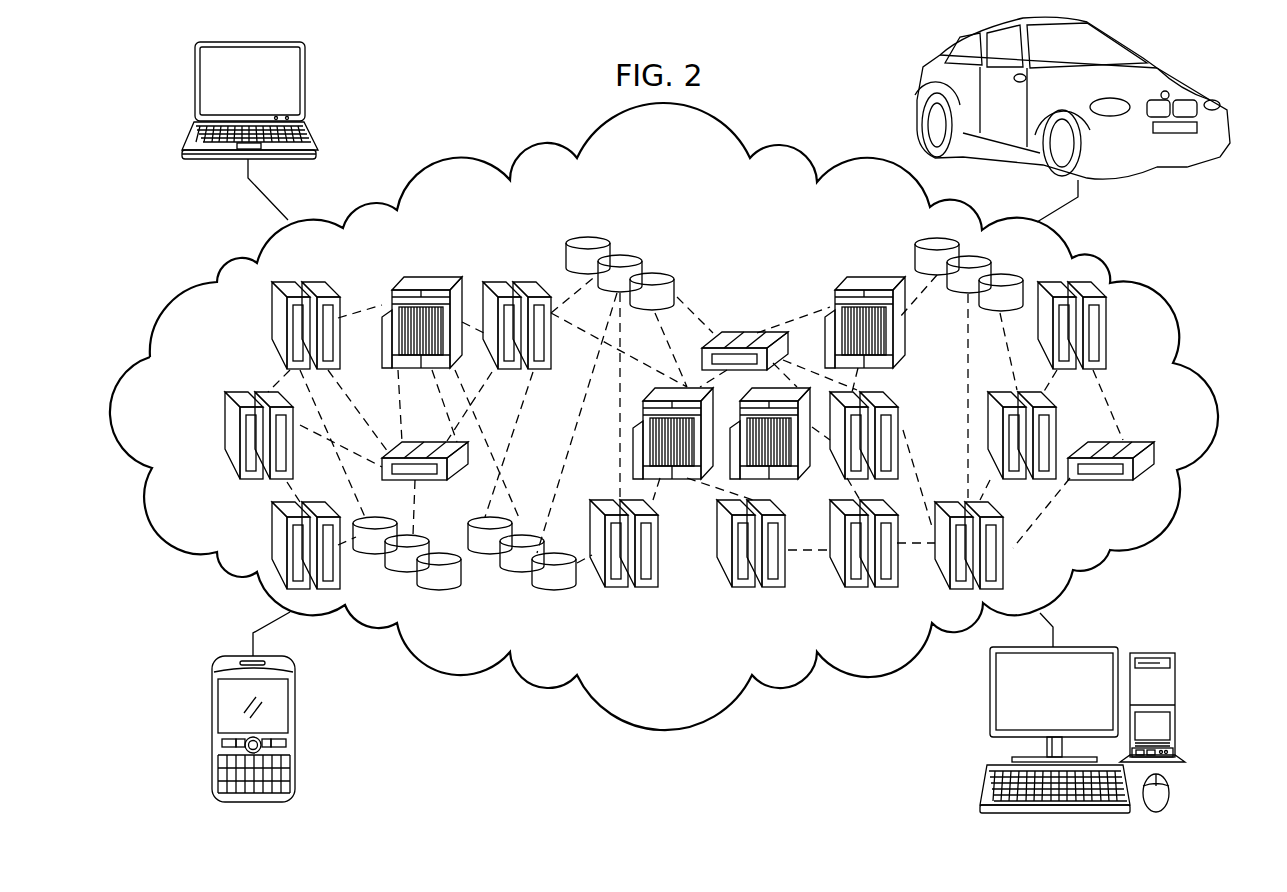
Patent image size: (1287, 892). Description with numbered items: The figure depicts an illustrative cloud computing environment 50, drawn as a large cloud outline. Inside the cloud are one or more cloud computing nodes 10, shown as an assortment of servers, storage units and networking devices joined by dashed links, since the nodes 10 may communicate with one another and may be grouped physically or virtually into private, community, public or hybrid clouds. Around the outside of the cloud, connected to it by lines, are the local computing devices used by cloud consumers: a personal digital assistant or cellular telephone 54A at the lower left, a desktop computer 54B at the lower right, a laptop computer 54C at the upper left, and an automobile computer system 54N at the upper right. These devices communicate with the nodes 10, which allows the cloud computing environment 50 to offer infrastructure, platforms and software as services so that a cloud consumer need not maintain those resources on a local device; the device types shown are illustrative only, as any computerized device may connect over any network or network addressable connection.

The cloud computing nodes 10 is at (501, 230).
The cloud computing environment 50 is at (657, 733).
The personal digital assistant (PDA) or cellular telephone 54A is at (212, 725).
The desktop computer 54B is at (1188, 722).
The laptop computer 54C is at (196, 62).
The automobile computer system 54N is at (1193, 62).